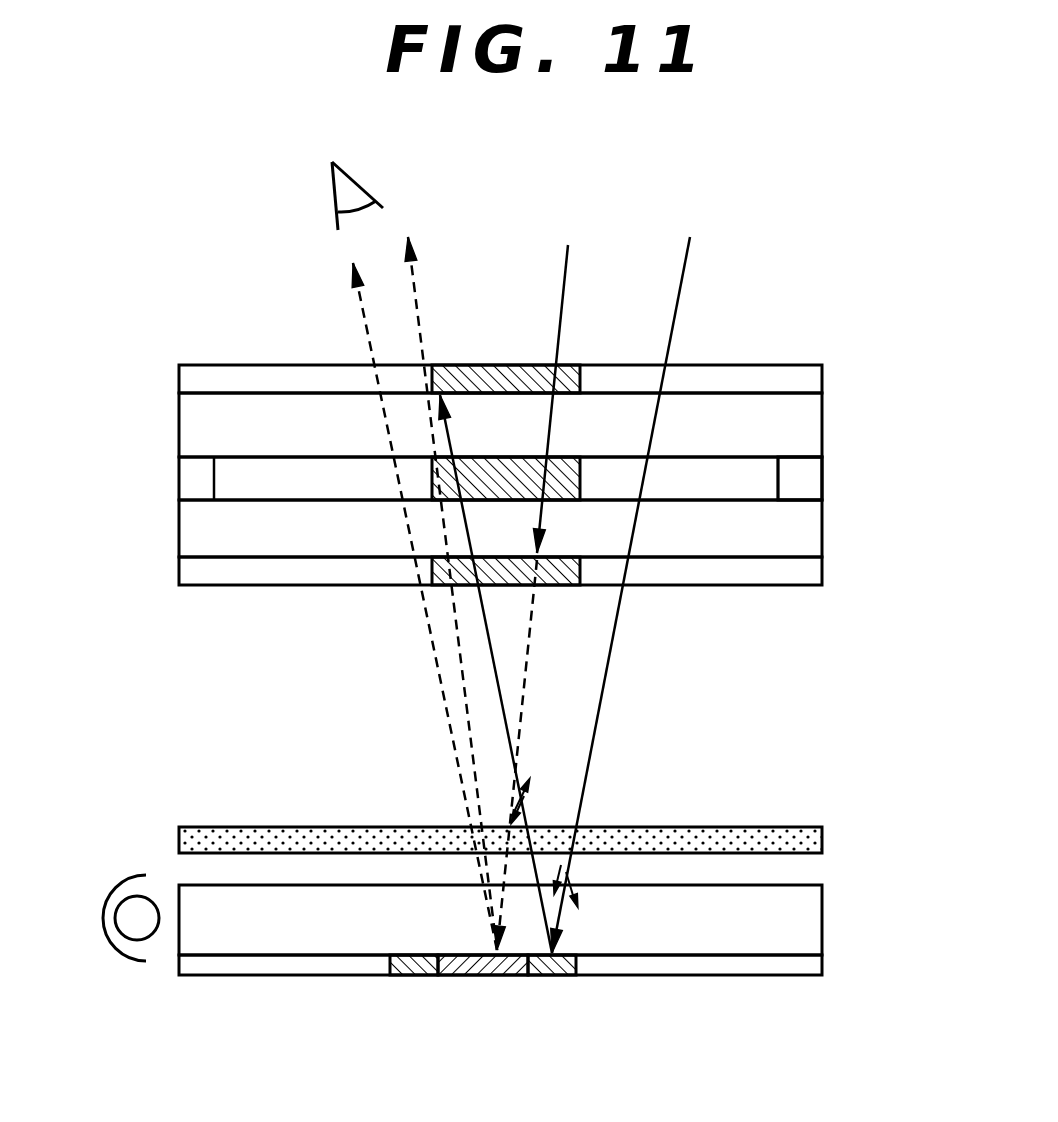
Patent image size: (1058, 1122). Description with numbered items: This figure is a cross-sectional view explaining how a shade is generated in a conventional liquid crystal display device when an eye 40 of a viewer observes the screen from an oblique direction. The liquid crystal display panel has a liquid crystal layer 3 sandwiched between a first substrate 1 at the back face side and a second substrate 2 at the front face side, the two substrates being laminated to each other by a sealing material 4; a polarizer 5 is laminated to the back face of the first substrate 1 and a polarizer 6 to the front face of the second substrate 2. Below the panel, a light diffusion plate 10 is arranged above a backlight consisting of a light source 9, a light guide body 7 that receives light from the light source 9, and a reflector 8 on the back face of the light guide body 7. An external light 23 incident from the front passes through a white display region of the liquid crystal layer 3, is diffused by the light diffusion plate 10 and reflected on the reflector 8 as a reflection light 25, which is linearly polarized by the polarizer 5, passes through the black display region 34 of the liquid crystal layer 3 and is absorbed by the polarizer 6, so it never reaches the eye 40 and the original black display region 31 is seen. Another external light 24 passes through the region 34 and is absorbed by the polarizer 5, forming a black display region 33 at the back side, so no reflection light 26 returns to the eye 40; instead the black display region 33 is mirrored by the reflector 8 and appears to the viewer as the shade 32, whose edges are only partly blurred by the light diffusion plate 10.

The first substrate 1 is at (806, 526).
The second substrate 2 is at (806, 433).
The liquid crystal layer 3 is at (753, 470).
The sealing material 4 is at (806, 479).
The polarizer 5 is at (806, 573).
The polarizer 6 is at (806, 381).
The light guide body 7 is at (806, 915).
The reflector 8 is at (806, 966).
The light source 9 is at (125, 922).
The light diffusion plate 10 is at (806, 839).
The external light 23 is at (571, 576).
The external light 24 is at (541, 577).
The reflection light 25 is at (451, 579).
The reflection light 26 is at (392, 606).
The black display region 31 is at (470, 365).
The shade 32 is at (483, 975).
The black display region 33 is at (565, 585).
The region 34 is at (510, 470).
The eye 40 is at (327, 188).